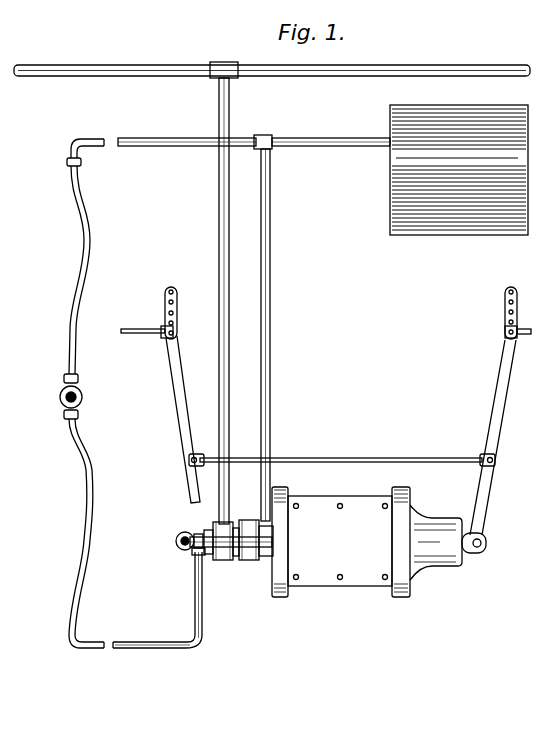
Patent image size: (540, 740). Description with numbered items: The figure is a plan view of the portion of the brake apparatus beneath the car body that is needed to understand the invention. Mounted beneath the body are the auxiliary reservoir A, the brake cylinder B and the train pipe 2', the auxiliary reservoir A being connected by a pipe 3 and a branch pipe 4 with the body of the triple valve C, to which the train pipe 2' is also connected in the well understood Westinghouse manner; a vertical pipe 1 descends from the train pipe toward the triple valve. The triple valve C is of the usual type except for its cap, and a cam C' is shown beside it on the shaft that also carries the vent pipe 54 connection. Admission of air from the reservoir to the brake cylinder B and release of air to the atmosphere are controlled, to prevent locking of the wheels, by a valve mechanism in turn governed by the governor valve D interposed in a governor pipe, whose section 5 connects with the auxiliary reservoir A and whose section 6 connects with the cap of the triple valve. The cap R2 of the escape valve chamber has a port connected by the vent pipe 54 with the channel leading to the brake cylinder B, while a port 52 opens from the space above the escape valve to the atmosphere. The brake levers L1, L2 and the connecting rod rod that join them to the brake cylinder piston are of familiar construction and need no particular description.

The train pipe 2' is at (272, 81).
The vertical pipe 1 is at (224, 301).
The governor pipe section 5 is at (171, 150).
The pipe 3 is at (348, 145).
The branch pipe 4 is at (272, 335).
The auxiliary reservoir A is at (459, 170).
The governor valve D is at (60, 401).
The governor pipe section 6 is at (192, 626).
The cap R2 is at (190, 532).
The port 52 is at (188, 551).
The vent pipe 54 is at (230, 536).
The cam C' is at (218, 556).
The triple valve C is at (253, 561).
The brake cylinder B is at (379, 542).
The left lever L1 is at (162, 395).
The right lever L2 is at (500, 411).
The connecting rod is at (341, 460).